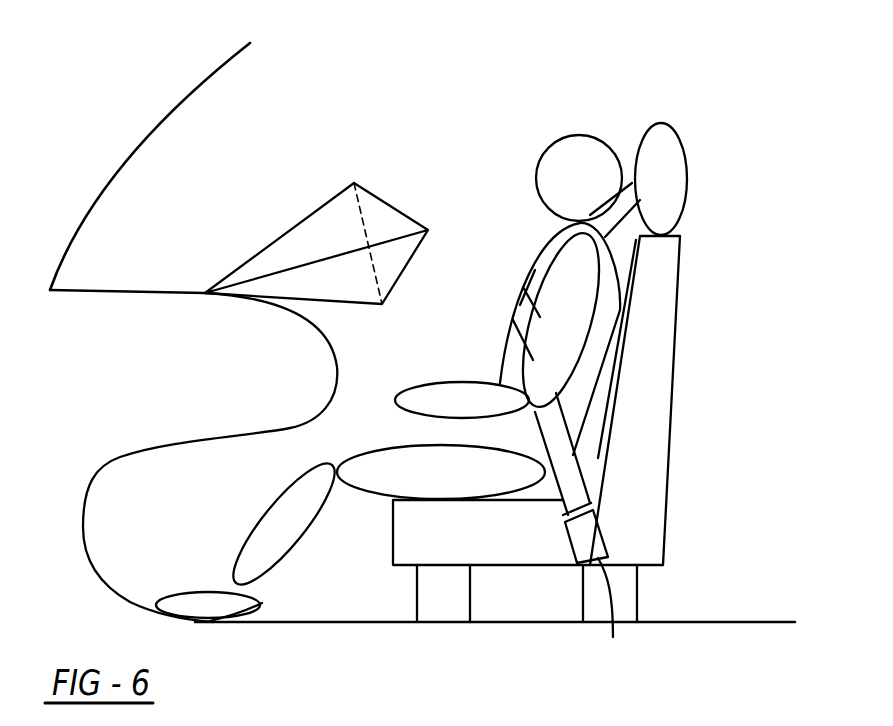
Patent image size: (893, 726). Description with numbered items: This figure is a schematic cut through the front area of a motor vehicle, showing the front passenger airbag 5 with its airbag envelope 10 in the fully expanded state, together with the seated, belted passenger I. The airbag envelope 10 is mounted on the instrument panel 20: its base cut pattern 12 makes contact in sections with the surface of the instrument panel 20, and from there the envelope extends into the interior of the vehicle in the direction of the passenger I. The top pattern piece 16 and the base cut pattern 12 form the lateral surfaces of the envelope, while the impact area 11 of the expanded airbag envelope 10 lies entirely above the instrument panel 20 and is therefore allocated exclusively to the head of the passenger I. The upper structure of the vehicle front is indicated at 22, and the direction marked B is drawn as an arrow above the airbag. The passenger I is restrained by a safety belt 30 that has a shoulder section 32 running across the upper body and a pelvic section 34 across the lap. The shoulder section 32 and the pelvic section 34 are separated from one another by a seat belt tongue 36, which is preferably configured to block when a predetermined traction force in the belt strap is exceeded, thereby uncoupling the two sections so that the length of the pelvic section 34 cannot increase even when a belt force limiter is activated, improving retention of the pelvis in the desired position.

The front passenger airbag 5 is at (302, 162).
The airbag envelope 10 is at (359, 292).
The impact area 11 is at (372, 215).
The base cut pattern 12 is at (331, 287).
The top pattern piece 16 is at (313, 230).
The instrument panel 20 is at (220, 368).
The windshield 22 is at (83, 215).
The safety belt 30 is at (557, 431).
The shoulder section 32 is at (522, 308).
The pelvic section 34 is at (530, 463).
The seat belt tongue 36 is at (597, 512).
The passenger I is at (600, 356).
The viewing direction B is at (424, 100).